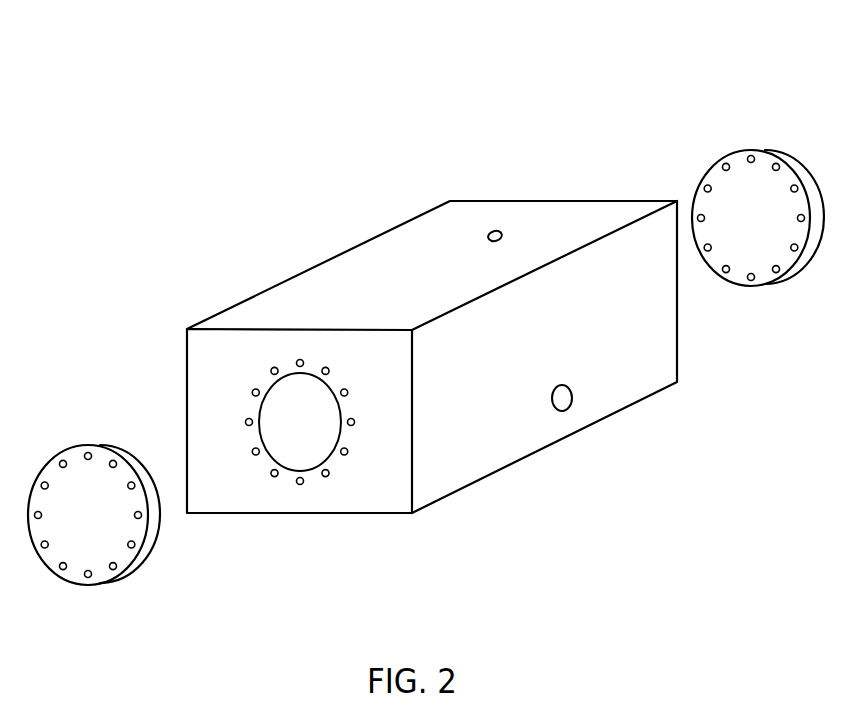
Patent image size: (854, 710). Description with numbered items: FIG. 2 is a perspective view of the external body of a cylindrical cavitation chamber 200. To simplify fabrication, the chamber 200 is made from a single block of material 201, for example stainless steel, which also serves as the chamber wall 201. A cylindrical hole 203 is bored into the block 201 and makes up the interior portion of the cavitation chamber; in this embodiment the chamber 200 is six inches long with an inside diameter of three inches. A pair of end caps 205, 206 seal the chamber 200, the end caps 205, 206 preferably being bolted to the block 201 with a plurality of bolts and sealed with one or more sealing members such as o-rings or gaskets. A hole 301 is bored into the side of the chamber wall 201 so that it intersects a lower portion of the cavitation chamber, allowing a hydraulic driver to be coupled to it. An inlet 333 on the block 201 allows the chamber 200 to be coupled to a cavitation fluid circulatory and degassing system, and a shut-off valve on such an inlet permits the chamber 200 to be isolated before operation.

The cavitation chamber 200 is at (426, 338).
The block of material 201 is at (630, 358).
The cylindrical hole 203 is at (284, 442).
The end cap 205 is at (88, 585).
The end cap 206 is at (738, 287).
The hole 301 is at (568, 399).
The inlet 333 is at (496, 222).